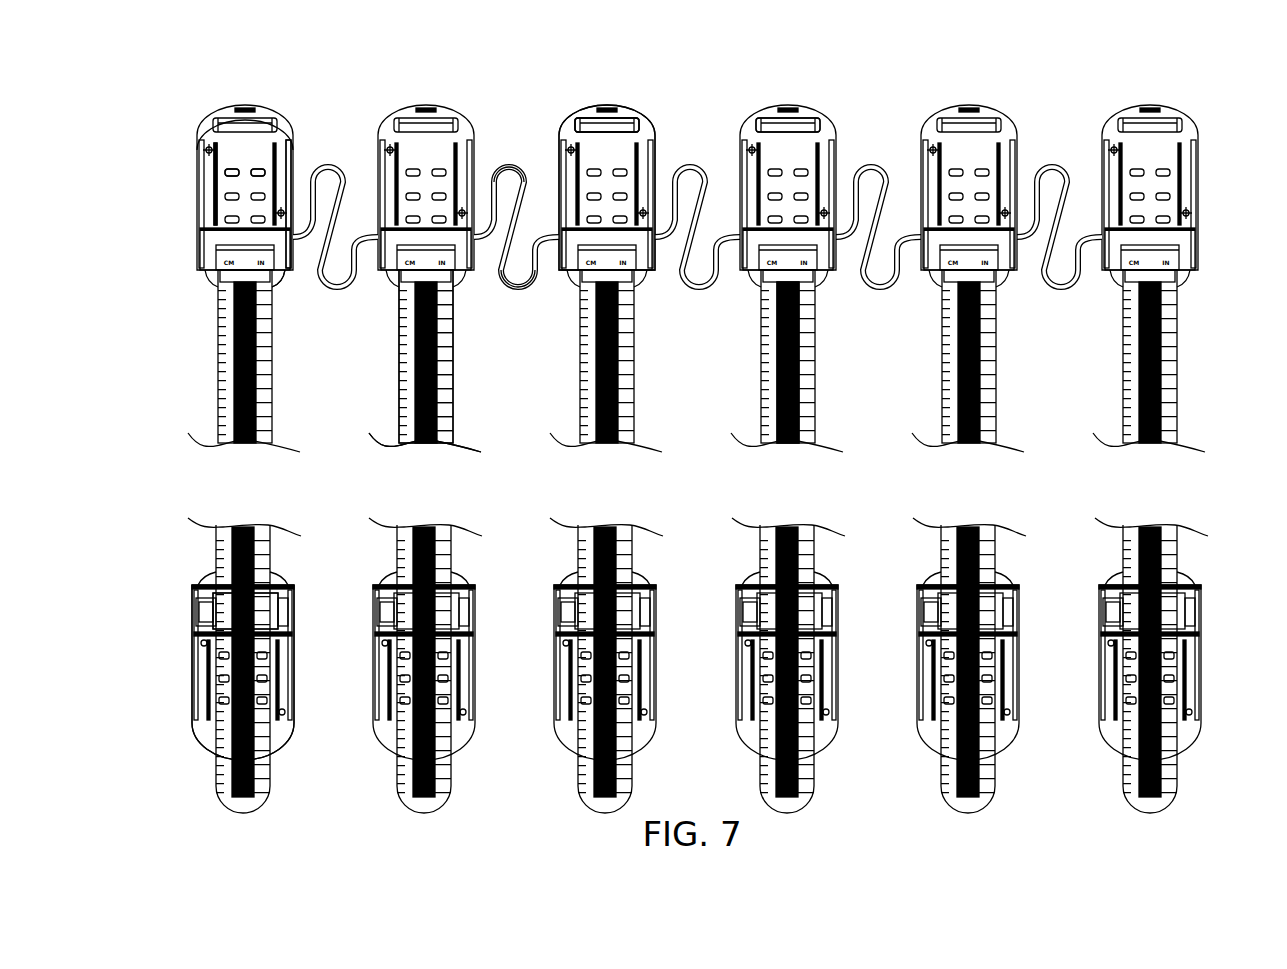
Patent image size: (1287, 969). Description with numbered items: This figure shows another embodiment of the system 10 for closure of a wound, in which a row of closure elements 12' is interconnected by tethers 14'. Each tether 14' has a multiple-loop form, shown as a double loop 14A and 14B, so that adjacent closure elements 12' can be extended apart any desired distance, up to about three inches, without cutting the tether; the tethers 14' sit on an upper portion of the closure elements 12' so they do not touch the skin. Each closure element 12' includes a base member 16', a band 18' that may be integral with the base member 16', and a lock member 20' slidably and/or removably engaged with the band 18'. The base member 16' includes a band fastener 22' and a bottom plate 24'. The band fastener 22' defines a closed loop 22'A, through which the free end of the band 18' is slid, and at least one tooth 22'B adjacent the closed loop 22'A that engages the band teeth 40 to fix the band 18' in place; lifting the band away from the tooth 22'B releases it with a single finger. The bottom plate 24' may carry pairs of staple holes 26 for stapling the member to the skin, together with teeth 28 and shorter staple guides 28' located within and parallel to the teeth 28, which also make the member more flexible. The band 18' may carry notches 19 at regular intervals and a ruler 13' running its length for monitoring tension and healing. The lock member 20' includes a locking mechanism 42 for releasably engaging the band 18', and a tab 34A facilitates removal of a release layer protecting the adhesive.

The measuring system 10 is at (840, 75).
The closure element 12' is at (768, 236).
The ruler 13' is at (798, 356).
The tether 14' is at (693, 190).
The loop of double loop 14A is at (526, 185).
The loop of double loop 14B is at (522, 292).
The base member 16' is at (808, 168).
The band 18' is at (1018, 362).
The notch 19 is at (450, 422).
The lock member 20' is at (454, 691).
The band fastener 22' is at (865, 80).
The closed loop 22'A is at (789, 91).
The tooth 22'B is at (634, 89).
The bottom plate 24' is at (704, 418).
The staple holes 26 is at (258, 172).
The teeth 28 is at (711, 383).
The staple guides 28' is at (707, 424).
The tab 34A is at (278, 278).
The band teeth 40 is at (440, 400).
The locking mechanism 42 is at (270, 612).